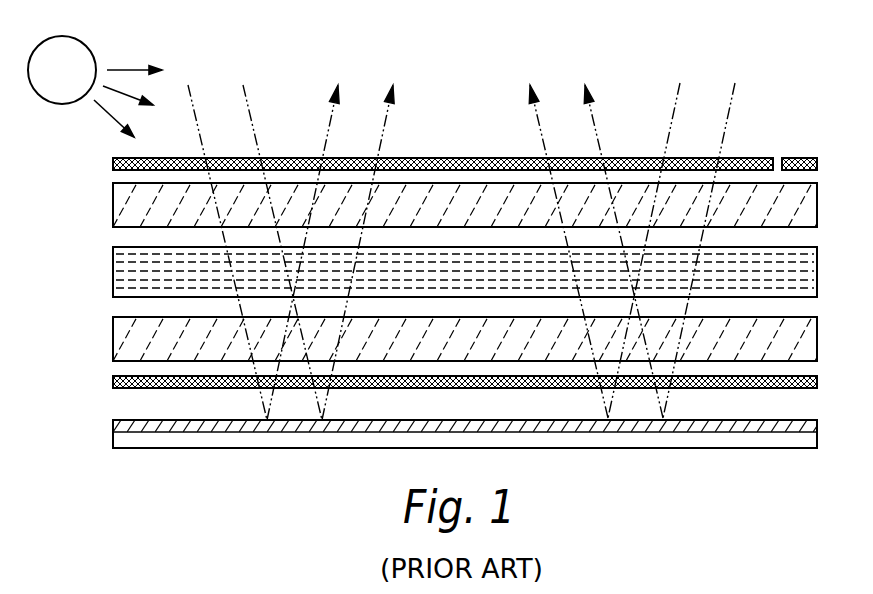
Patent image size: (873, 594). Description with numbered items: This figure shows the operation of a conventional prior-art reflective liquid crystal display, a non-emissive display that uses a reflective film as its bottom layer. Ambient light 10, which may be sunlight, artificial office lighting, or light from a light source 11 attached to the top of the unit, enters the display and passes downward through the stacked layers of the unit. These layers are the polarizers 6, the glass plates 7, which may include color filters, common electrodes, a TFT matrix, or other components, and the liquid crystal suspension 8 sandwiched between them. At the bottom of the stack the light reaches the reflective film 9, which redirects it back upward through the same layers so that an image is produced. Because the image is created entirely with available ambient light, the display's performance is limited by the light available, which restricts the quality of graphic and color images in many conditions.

The polarizers 6 is at (113, 168).
The glass plates 7 is at (113, 205).
The liquid crystal suspension 8 is at (113, 270).
The reflective film 9 is at (113, 430).
The ambient light 10 is at (727, 128).
The light source 11 is at (78, 40).